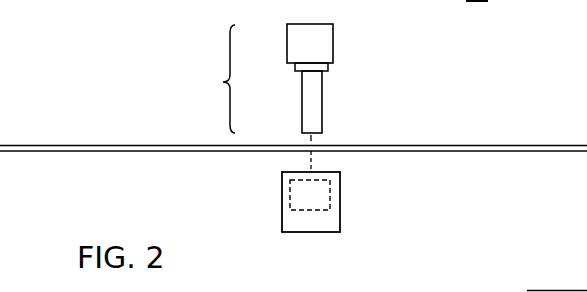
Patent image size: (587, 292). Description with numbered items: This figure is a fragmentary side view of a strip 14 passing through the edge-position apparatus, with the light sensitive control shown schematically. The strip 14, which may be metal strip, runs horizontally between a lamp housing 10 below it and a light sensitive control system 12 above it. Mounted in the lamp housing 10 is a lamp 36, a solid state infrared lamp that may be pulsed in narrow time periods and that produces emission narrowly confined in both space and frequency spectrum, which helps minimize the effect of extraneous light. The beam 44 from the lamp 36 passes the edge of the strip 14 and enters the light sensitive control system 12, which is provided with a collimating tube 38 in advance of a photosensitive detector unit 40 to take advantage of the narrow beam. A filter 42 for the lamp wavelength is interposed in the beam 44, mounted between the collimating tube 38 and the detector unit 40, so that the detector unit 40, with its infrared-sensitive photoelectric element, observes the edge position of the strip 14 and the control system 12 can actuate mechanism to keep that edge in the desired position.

The lamp housing 10 is at (332, 220).
The light sensitive control system 12 is at (291, 78).
The strip 14 is at (423, 145).
The lamp 36 is at (292, 202).
The collimating tube 38 is at (309, 107).
The photosensitive detector unit 40 is at (327, 47).
The filter 42 is at (295, 68).
The beam 44 is at (313, 139).